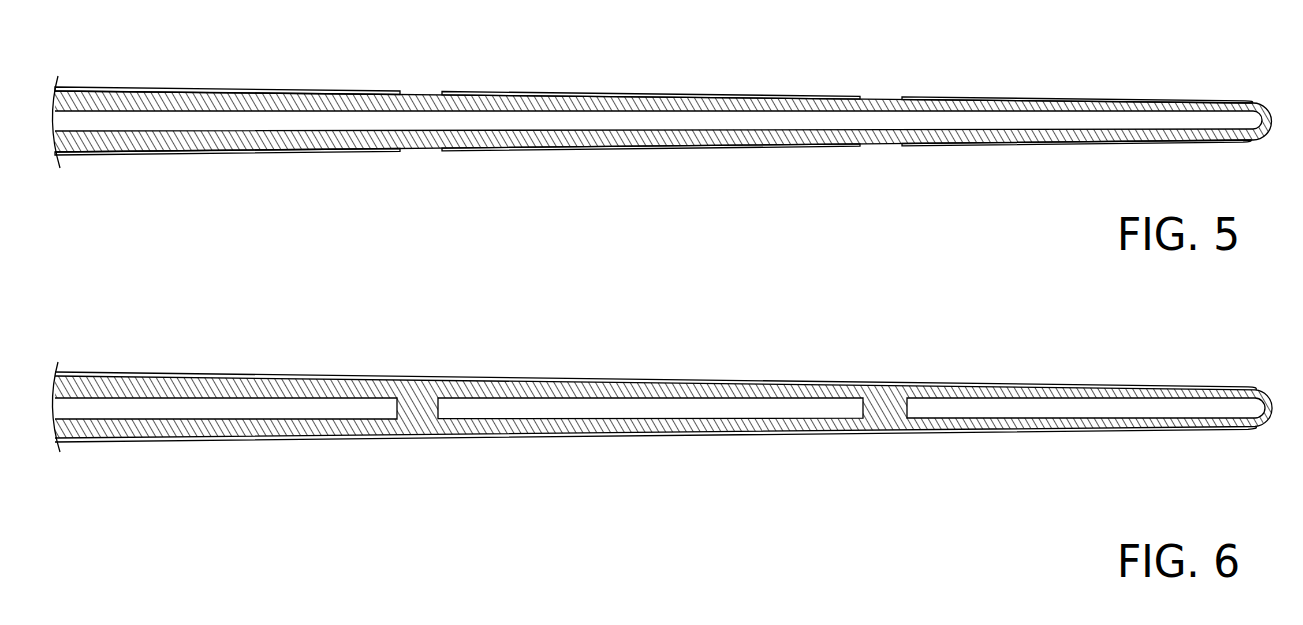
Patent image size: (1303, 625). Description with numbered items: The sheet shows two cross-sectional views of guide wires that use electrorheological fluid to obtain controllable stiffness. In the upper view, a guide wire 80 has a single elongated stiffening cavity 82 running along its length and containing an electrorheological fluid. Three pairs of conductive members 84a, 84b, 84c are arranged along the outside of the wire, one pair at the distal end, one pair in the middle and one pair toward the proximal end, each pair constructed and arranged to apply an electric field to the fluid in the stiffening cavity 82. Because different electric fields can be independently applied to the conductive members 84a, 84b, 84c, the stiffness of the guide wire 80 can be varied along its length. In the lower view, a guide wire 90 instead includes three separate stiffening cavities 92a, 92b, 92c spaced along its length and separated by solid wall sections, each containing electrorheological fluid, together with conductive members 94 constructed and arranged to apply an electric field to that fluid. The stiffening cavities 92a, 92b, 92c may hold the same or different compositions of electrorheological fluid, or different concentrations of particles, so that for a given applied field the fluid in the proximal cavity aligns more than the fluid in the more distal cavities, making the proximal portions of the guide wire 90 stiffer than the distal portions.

In FIG. 5, the guide wire 80 is at (1125, 141).
In FIG. 5, the stiffening cavity 82 is at (1042, 113).
In FIG. 5, the conductive members 84a is at (983, 97).
In FIG. 5, the conductive members 84b is at (548, 91).
In FIG. 5, the conductive members 84c is at (258, 89).
In FIG. 6, the guide wire 90 is at (1272, 412).
In FIG. 6, the stiffening cavity 92a is at (948, 413).
In FIG. 6, the stiffening cavity 92b is at (663, 412).
In FIG. 6, the stiffening cavity 92c is at (233, 412).
In FIG. 6, the conductive members 94 is at (1010, 384).